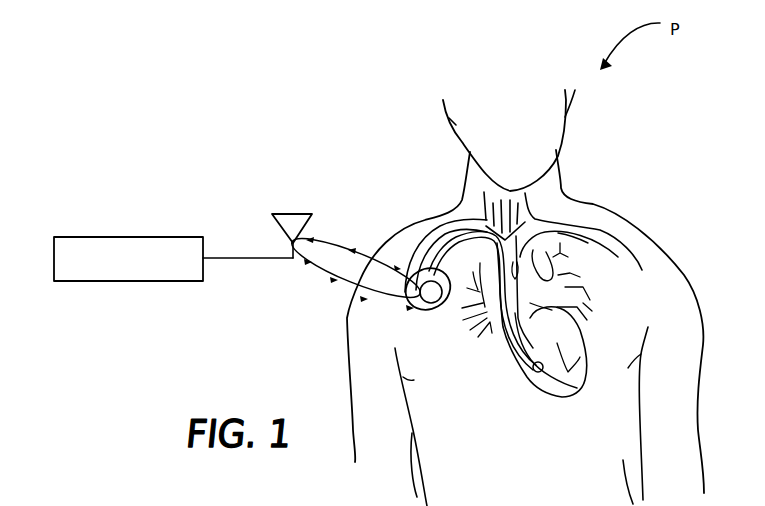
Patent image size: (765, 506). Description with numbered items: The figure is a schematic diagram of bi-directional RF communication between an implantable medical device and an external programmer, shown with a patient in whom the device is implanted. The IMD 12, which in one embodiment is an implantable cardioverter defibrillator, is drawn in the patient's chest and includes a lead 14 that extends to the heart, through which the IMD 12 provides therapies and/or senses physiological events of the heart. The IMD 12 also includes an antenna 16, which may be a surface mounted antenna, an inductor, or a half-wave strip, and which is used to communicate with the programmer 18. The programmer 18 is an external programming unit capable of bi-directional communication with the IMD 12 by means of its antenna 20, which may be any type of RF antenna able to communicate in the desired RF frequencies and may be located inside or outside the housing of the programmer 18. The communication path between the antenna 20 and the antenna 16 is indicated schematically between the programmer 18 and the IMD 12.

The implantable medical device 12 is at (427, 311).
The lead 14 is at (452, 226).
The antenna 16 is at (442, 292).
The programmer 18 is at (90, 238).
The antenna 20 is at (285, 233).